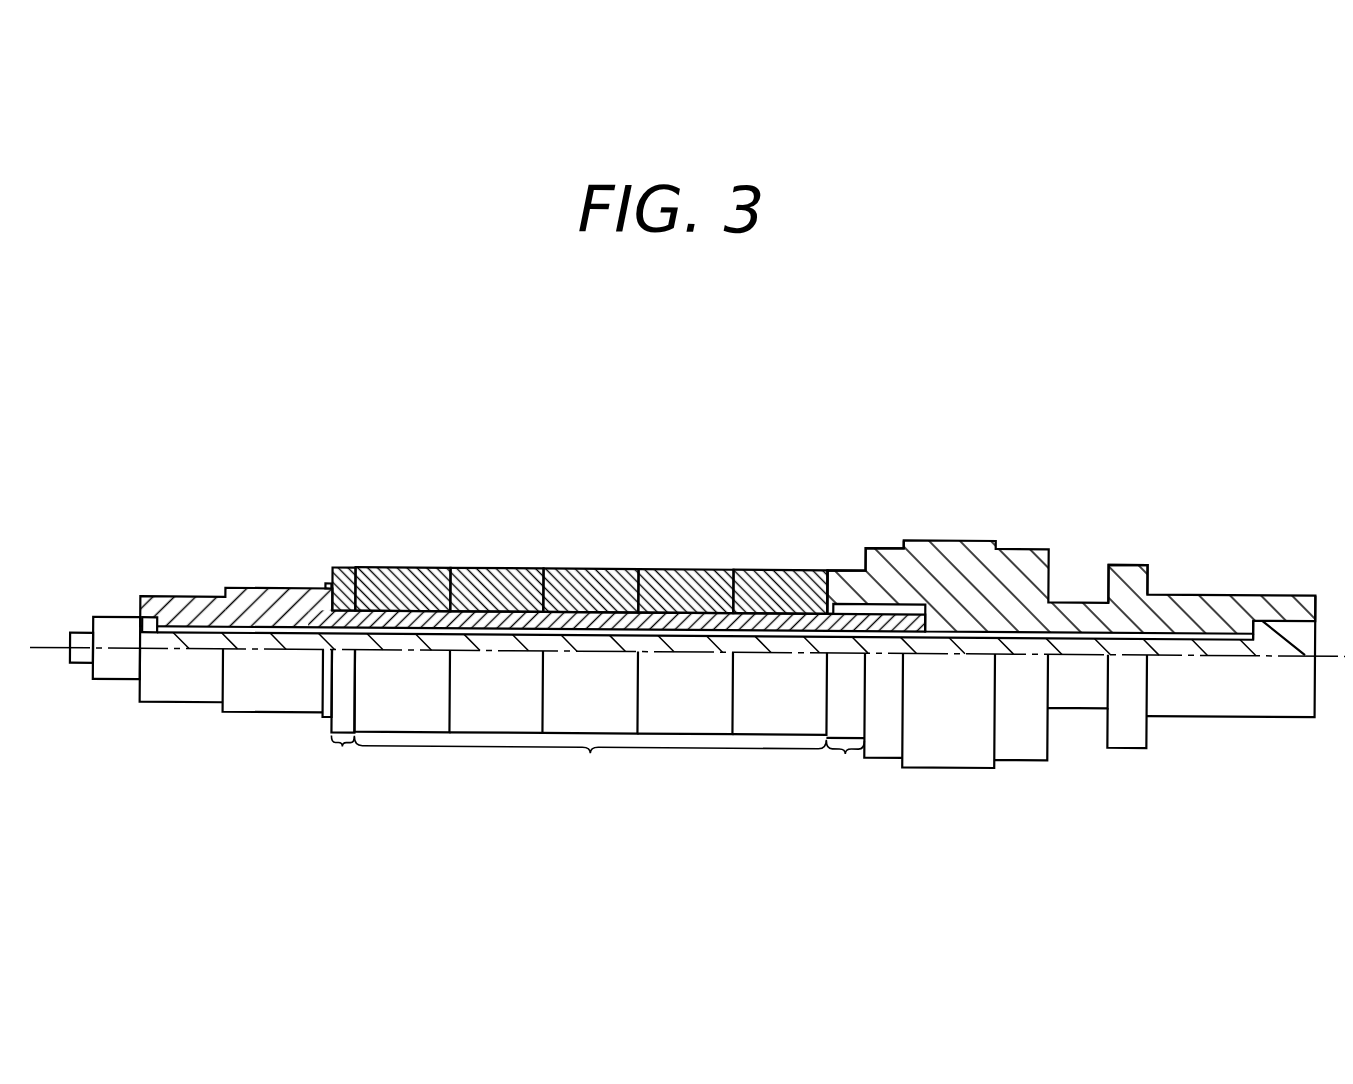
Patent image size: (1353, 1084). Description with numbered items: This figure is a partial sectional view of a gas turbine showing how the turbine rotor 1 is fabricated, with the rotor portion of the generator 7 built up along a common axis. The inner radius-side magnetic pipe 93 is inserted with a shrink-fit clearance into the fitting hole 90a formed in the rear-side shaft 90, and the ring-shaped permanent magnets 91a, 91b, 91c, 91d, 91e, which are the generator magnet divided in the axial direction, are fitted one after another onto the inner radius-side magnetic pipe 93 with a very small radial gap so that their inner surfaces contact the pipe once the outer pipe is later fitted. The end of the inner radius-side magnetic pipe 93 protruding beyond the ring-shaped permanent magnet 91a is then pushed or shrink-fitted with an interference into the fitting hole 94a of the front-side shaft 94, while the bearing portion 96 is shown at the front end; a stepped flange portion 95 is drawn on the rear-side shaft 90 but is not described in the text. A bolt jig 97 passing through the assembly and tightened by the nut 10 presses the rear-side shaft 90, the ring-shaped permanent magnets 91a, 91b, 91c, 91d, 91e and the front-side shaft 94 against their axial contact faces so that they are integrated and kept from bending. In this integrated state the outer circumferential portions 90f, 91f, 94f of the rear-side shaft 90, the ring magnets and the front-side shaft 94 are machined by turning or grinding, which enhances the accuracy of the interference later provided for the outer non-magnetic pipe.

The turbine rotor 1 is at (940, 419).
The generator 7 is at (657, 418).
The nut 10 is at (120, 632).
The rear-side shaft 90 is at (1210, 592).
The fitting hole 90a is at (888, 578).
The outer circumferential portion 90f is at (843, 768).
The ring-shaped permanent magnet 91a is at (403, 583).
The ring-shaped permanent magnet 91b is at (497, 583).
The ring-shaped permanent magnet 91c is at (590, 583).
The ring-shaped permanent magnet 91d is at (690, 575).
The ring-shaped permanent magnet 91e is at (783, 575).
The outer circumferential portion 91f is at (590, 763).
The inner radius-side magnetic pipe 93 is at (349, 612).
The front-side shaft 94 is at (262, 606).
The fitting hole 94a is at (325, 588).
The outer circumferential portion 94f is at (343, 761).
The flange 95 is at (1080, 598).
The bearing portion 96 is at (190, 611).
The bolt jig 97 is at (83, 661).